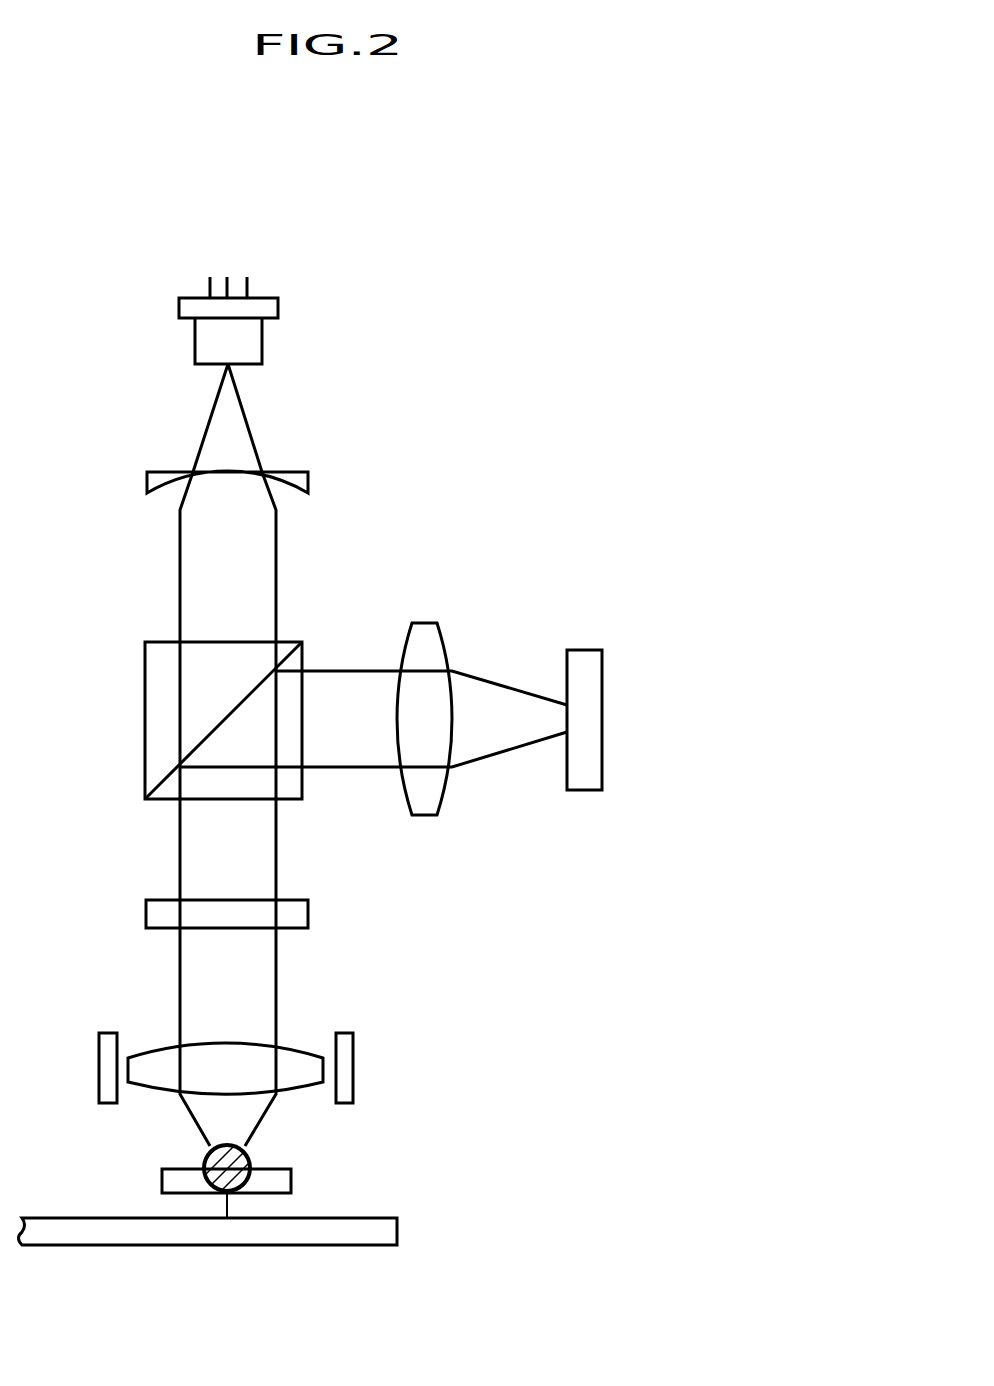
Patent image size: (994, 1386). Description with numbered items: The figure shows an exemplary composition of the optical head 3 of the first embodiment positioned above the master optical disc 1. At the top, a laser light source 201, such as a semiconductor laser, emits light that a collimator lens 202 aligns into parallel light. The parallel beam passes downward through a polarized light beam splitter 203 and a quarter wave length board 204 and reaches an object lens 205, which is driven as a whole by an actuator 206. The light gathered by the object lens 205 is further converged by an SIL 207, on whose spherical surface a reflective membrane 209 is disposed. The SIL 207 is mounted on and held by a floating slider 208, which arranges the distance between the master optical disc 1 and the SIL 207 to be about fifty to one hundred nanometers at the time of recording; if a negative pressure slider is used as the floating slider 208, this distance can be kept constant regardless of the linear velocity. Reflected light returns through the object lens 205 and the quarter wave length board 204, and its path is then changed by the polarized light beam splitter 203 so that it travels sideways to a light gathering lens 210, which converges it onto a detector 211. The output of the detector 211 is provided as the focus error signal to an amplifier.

The master optical disc 1 is at (350, 1233).
The optical head 3 is at (568, 542).
The laser light source 201 is at (255, 343).
The collimator lens 202 is at (297, 487).
The polarized light beam splitter 203 is at (145, 707).
The quarter wave length board 204 is at (153, 915).
The object lens 205 is at (300, 1083).
The actuator 206 is at (347, 1055).
The SIL 207 is at (217, 1188).
The floating slider 208 is at (291, 1180).
The reflective membrane 209 is at (208, 1148).
The light gathering lens 210 is at (425, 627).
The detector 211 is at (582, 667).